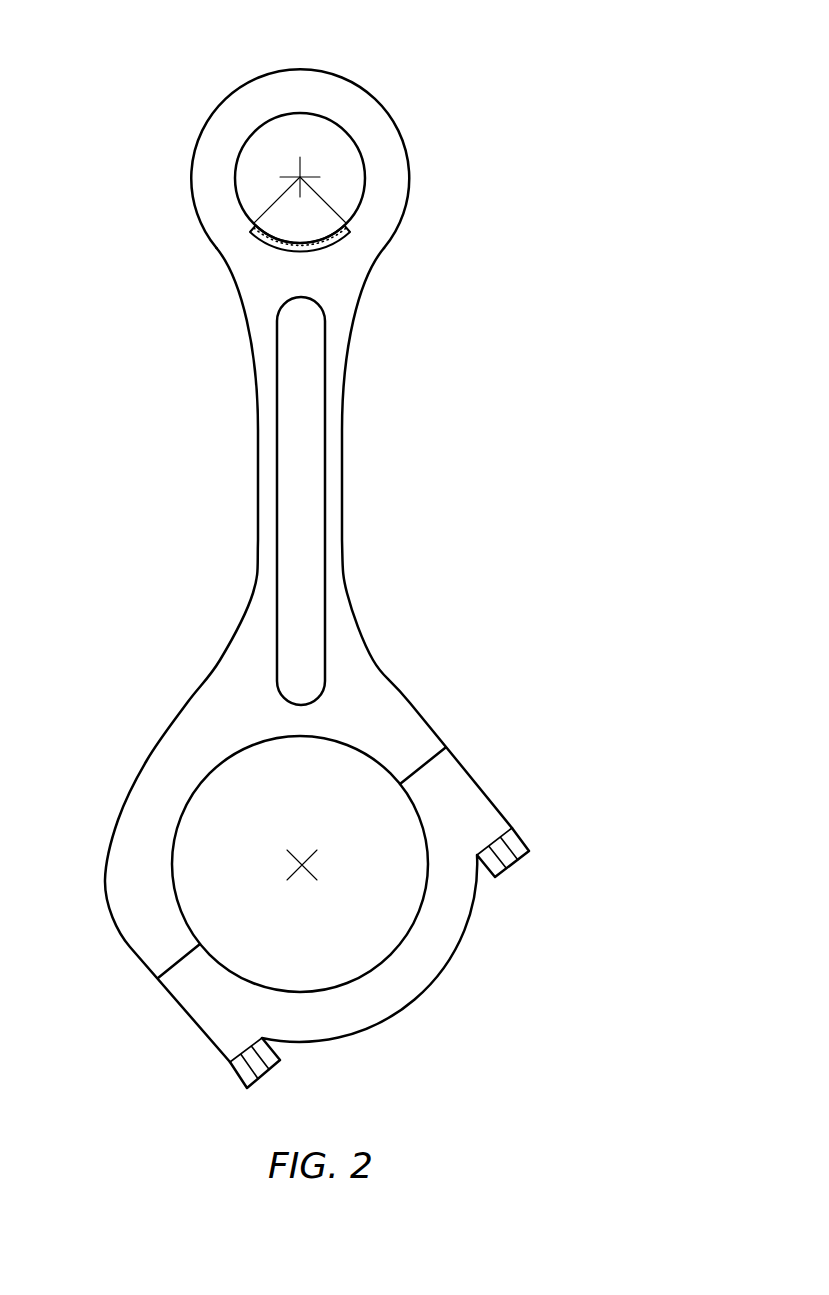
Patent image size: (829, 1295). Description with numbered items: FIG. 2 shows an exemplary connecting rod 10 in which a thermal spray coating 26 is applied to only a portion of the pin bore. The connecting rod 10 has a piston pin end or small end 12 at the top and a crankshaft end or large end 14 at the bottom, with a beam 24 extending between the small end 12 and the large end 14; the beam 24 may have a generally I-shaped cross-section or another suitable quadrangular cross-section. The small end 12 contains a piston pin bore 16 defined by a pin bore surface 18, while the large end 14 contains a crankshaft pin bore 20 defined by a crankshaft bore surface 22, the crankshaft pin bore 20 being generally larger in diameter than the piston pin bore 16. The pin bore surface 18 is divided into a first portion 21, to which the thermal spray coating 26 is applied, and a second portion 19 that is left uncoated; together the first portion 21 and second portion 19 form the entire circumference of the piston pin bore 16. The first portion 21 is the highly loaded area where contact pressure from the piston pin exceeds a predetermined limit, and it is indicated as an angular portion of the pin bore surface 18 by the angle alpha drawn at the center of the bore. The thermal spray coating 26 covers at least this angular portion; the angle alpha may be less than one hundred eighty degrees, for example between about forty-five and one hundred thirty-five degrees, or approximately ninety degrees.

The connecting rod 10 is at (318, 562).
The small end 12 is at (438, 86).
The large end 14 is at (517, 809).
The piston pin bore 16 is at (278, 160).
The pin bore surface 18 is at (366, 199).
The second portion 19 is at (332, 135).
The crankshaft pin bore 20 is at (370, 945).
The first portion 21 is at (313, 228).
The crankshaft bore surface 22 is at (173, 887).
The beam 24 is at (257, 462).
The thermal spray coating 26 is at (320, 251).